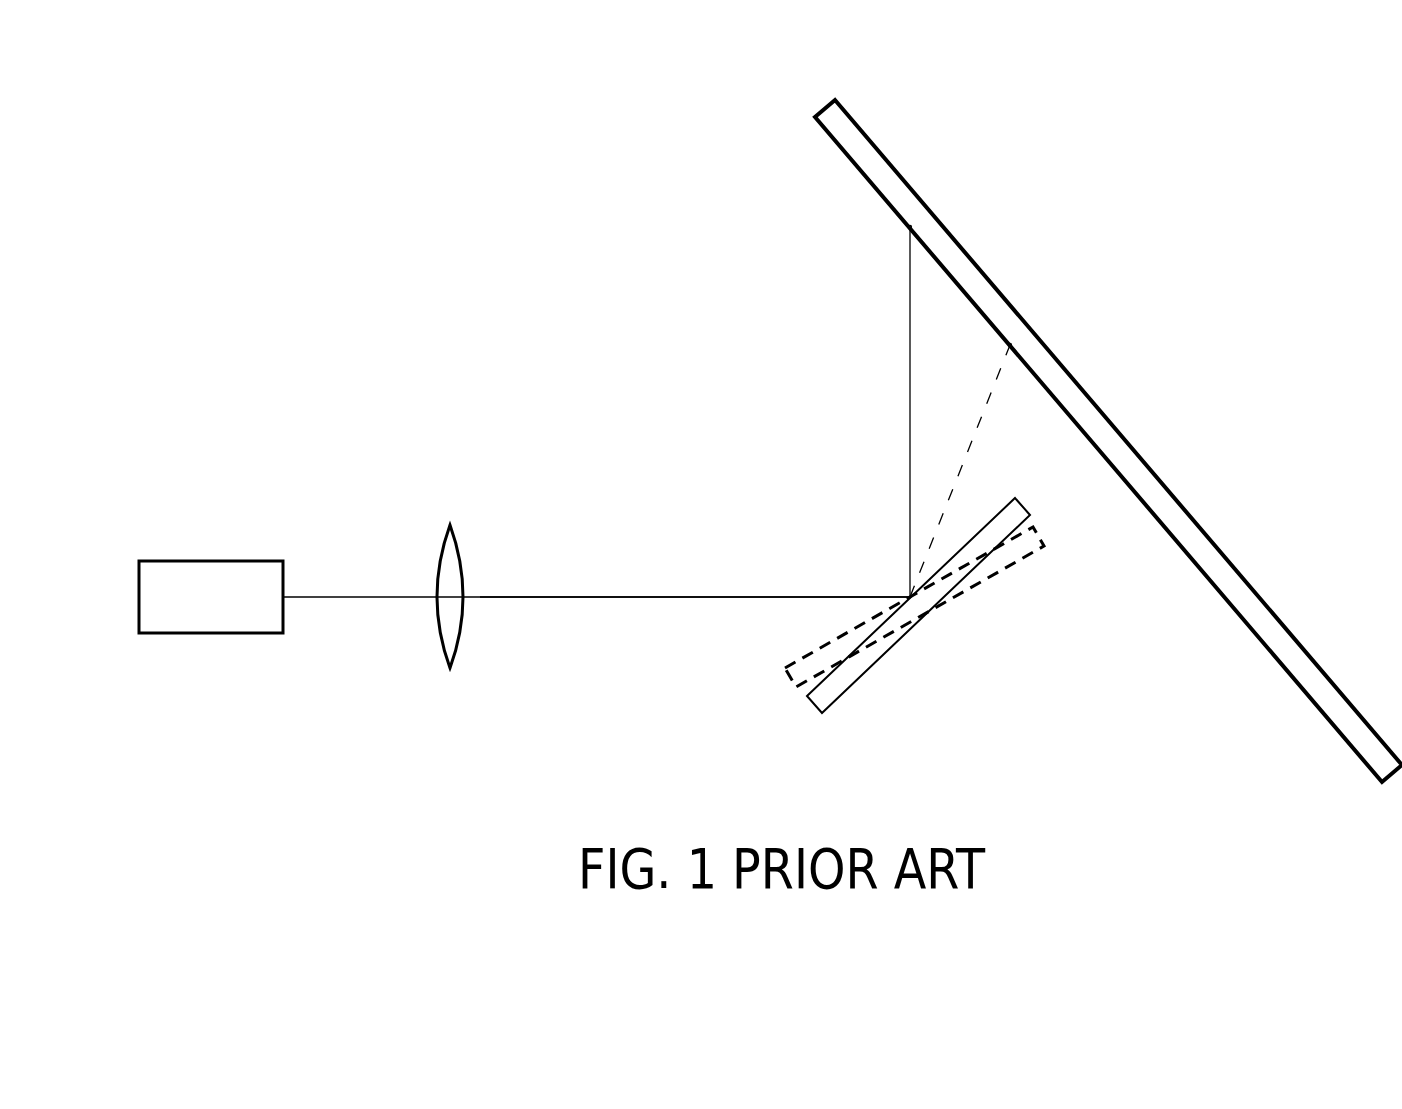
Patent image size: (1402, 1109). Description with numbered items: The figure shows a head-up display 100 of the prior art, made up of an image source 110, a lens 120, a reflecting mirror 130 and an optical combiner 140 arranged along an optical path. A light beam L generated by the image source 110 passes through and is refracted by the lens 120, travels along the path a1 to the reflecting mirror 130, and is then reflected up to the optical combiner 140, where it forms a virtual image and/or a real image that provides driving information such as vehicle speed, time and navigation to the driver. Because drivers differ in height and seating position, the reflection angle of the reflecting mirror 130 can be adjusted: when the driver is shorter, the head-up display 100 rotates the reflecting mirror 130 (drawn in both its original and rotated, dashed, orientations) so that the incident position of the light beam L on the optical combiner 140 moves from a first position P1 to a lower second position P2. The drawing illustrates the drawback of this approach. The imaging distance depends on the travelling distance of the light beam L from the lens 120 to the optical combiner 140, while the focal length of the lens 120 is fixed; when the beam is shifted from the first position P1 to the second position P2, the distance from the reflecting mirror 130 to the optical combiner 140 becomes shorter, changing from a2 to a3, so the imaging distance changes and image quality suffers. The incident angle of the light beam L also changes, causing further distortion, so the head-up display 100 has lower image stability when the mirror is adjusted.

The head-up display 100 is at (447, 215).
The image source 110 is at (213, 560).
The light beam L is at (372, 565).
The lens 120 is at (446, 660).
The reflecting mirror 130 is at (821, 706).
The optical combiner 140 is at (1314, 712).
The light path from lens to reflecting mirror a1 is at (695, 580).
The travelling distance from reflecting mirror to optical combiner at first position a2 is at (891, 412).
The travelling distance from reflecting mirror to optical combiner at second positio a3 is at (960, 471).
The first position P1 is at (912, 225).
The second position P2 is at (1004, 360).